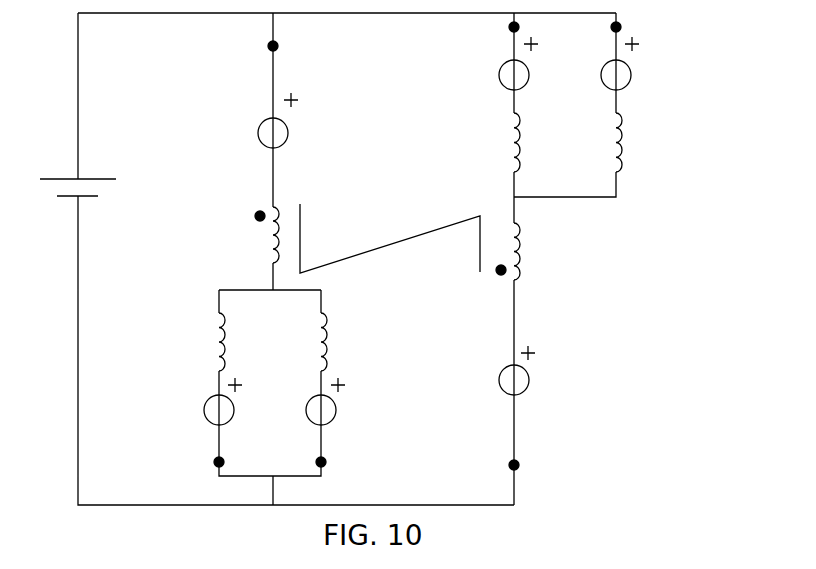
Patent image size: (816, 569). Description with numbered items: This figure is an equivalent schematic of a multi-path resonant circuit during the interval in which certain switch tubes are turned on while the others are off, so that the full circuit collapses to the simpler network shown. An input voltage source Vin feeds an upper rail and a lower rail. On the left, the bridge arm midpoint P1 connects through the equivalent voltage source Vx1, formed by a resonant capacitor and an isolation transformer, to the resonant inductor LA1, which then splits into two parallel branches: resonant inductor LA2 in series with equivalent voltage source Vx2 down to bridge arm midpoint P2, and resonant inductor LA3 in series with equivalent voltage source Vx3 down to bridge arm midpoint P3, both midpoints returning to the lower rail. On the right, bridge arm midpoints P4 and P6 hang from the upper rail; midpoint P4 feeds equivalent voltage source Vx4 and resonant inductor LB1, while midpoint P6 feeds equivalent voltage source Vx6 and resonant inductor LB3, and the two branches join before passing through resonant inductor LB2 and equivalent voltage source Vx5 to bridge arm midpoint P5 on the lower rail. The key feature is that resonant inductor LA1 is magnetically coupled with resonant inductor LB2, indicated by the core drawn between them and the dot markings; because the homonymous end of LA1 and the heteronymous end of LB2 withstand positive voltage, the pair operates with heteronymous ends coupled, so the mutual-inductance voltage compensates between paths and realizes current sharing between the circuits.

The input voltage source Vin is at (69, 169).
The bridge arm midpoint P1 is at (259, 49).
The bridge arm midpoint P2 is at (204, 463).
The bridge arm midpoint P3 is at (337, 463).
The bridge arm midpoint P4 is at (500, 32).
The bridge arm midpoint P5 is at (499, 466).
The bridge arm midpoint P6 is at (601, 32).
The equivalent voltage source Vx1 is at (255, 123).
The equivalent voltage source Vx2 is at (199, 401).
The equivalent voltage source Vx3 is at (346, 405).
The equivalent voltage source Vx4 is at (497, 77).
The equivalent voltage source Vx5 is at (540, 372).
The equivalent voltage source Vx6 is at (596, 72).
The resonant inductor LA1 is at (253, 236).
The resonant inductor LA2 is at (203, 342).
The resonant inductor LA3 is at (347, 342).
The resonant inductor LB1 is at (496, 142).
The resonant inductor LB2 is at (533, 251).
The resonant inductor LB3 is at (643, 142).